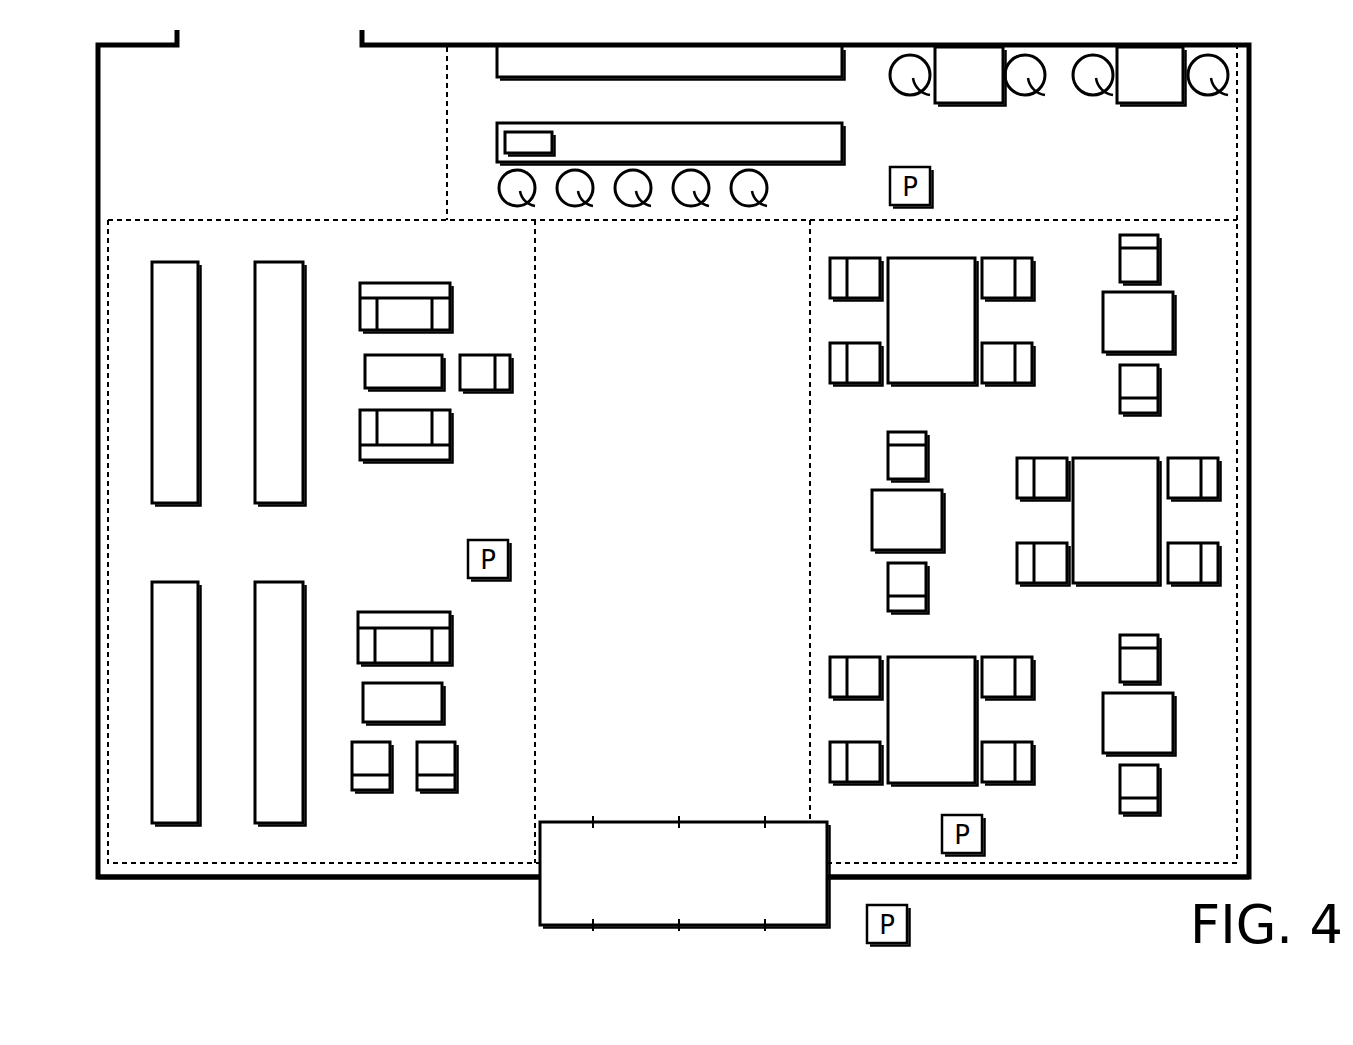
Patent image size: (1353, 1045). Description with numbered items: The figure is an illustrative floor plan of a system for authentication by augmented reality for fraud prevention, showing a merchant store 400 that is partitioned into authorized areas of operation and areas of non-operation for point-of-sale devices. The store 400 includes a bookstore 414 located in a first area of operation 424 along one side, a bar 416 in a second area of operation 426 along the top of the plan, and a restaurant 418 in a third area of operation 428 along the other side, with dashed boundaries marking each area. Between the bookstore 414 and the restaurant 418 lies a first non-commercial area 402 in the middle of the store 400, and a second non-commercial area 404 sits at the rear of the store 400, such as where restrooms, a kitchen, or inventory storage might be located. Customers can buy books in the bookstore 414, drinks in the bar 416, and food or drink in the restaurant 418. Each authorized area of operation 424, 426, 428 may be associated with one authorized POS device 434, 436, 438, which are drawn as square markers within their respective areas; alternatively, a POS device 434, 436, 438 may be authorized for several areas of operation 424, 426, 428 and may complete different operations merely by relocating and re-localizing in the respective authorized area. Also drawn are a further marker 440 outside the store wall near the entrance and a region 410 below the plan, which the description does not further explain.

The merchant store 400 is at (1290, 116).
The first non-commercial area 402 is at (704, 707).
The second non-commercial area 404 is at (297, 143).
The venue exterior / building wall 410 is at (358, 932).
The bookstore 414 is at (384, 552).
The bar 416 is at (1169, 182).
The restaurant 418 is at (1083, 438).
The first area of operation 424 is at (535, 463).
The second area of operation 426 is at (610, 220).
The third area of operation 428 is at (810, 513).
The POS device 434 is at (507, 557).
The POS device 436 is at (930, 184).
The POS device 438 is at (982, 832).
The positioning beacon 440 is at (907, 922).